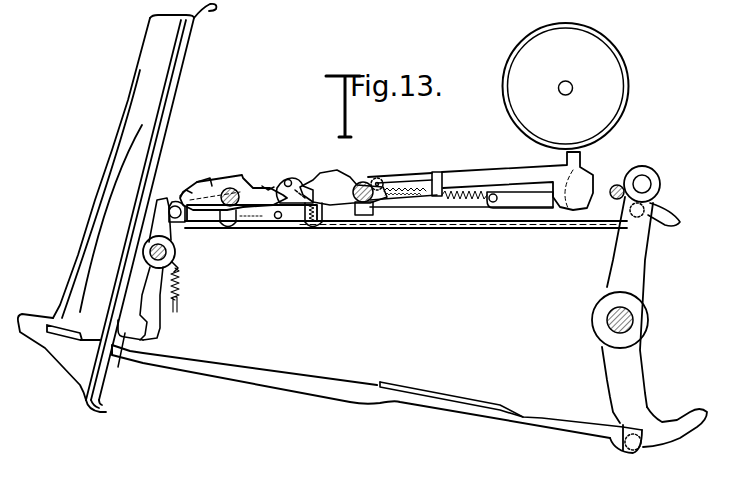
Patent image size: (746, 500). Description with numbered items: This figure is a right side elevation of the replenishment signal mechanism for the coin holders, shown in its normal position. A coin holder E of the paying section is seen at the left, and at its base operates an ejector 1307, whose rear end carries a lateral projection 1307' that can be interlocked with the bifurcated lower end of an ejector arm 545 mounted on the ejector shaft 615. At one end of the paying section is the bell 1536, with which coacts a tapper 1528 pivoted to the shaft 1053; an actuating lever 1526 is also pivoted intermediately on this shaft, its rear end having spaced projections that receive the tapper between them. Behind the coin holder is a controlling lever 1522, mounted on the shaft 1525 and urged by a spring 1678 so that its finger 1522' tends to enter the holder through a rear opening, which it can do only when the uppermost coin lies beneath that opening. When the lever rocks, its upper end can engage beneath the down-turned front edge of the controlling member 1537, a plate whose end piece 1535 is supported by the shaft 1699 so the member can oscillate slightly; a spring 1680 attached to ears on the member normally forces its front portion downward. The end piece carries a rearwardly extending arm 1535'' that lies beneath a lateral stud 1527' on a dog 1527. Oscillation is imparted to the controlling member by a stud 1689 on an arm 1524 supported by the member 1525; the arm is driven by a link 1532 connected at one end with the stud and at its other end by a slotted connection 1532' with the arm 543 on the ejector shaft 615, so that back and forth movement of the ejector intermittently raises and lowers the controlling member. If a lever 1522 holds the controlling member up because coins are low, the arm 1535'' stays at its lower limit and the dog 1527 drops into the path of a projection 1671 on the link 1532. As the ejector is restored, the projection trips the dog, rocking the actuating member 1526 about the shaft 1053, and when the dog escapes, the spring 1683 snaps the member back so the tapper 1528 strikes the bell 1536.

The coin holder E is at (155, 96).
The link 1532 is at (406, 247).
The slotted connection 1532' is at (660, 205).
The shaft 1699 is at (270, 190).
The end piece 1535 is at (208, 155).
The rearwardly extending arm 1535'' is at (271, 159).
The controlling member 1537 is at (183, 194).
The spring 1680 is at (237, 221).
The stud 1689 is at (192, 221).
The projection 1671 is at (280, 219).
The dog 1527 is at (309, 162).
The lateral stud 1527' is at (310, 169).
The actuating lever 1526 is at (333, 210).
The spring 1683 is at (333, 187).
The shaft 1053 is at (382, 177).
The tapper 1528 is at (477, 176).
The bell 1536 is at (624, 108).
The arm 543 is at (647, 277).
The ejector shaft 615 is at (613, 323).
The ejector arm 545 is at (623, 377).
The ejector 1307 is at (377, 399).
The lateral projection 1307' is at (650, 460).
The arm 1524 is at (193, 221).
The shaft 1525 is at (145, 253).
The spring 1678 is at (180, 280).
The controlling lever 1522 is at (167, 306).
The finger 1522' is at (125, 362).